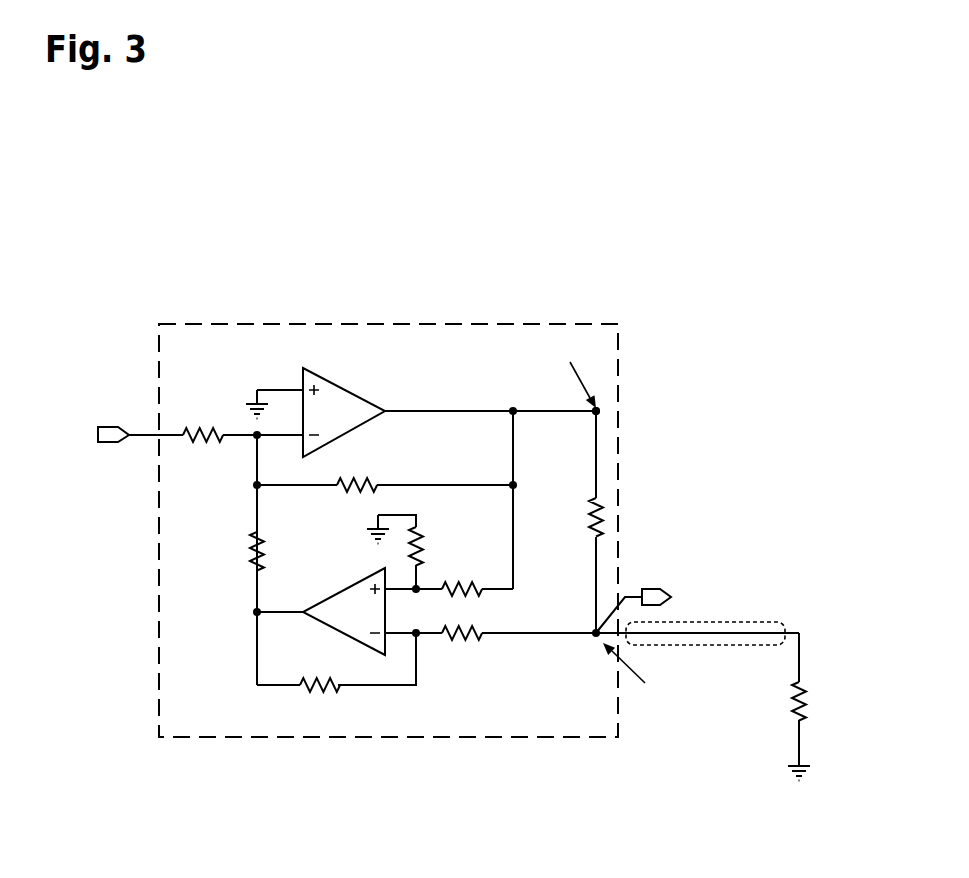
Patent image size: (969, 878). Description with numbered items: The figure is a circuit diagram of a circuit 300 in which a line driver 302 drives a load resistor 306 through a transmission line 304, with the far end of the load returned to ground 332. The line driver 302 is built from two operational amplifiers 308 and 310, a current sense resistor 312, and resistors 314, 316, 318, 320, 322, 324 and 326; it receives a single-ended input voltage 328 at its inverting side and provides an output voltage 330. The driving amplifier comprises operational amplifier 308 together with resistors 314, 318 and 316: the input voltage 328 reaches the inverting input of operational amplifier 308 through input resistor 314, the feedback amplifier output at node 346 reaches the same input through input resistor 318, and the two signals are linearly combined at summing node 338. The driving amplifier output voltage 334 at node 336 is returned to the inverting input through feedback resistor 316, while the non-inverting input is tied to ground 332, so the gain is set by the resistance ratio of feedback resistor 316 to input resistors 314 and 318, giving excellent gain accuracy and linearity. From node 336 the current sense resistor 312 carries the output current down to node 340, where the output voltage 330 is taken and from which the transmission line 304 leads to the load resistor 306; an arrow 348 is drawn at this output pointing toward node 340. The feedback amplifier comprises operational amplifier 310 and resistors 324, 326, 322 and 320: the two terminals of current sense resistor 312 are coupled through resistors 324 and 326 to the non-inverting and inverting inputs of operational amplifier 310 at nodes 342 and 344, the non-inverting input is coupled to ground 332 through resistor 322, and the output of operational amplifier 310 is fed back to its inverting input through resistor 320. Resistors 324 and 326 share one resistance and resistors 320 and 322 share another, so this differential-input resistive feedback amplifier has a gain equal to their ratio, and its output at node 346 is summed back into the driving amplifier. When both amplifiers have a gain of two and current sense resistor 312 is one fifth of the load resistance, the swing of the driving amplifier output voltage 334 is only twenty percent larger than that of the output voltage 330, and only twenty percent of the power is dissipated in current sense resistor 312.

The circuit 300 is at (760, 97).
The line driver 302 is at (420, 324).
The transmission line 304 is at (728, 646).
The load resistor 306 is at (792, 705).
The operational amplifier 308 is at (350, 391).
The operational amplifier 310 is at (348, 589).
The current sense resistor 312 is at (592, 520).
The resistor 314 is at (200, 441).
The resistor 316 is at (372, 483).
The resistor 318 is at (255, 552).
The resistor 320 is at (318, 690).
The resistor 322 is at (421, 545).
The resistor 324 is at (465, 585).
The resistor 326 is at (460, 640).
The input voltage VIN 328 is at (98, 434).
The output voltage VOUT 330 is at (674, 605).
The ground 332 is at (255, 402).
The output voltage VAMP 334 is at (593, 408).
The node 336 is at (595, 416).
The summing node 338 is at (256, 486).
The output node 340 is at (594, 630).
The node 342 is at (416, 592).
The node 344 is at (418, 636).
The node 346 is at (256, 612).
The arrow 348 is at (626, 652).